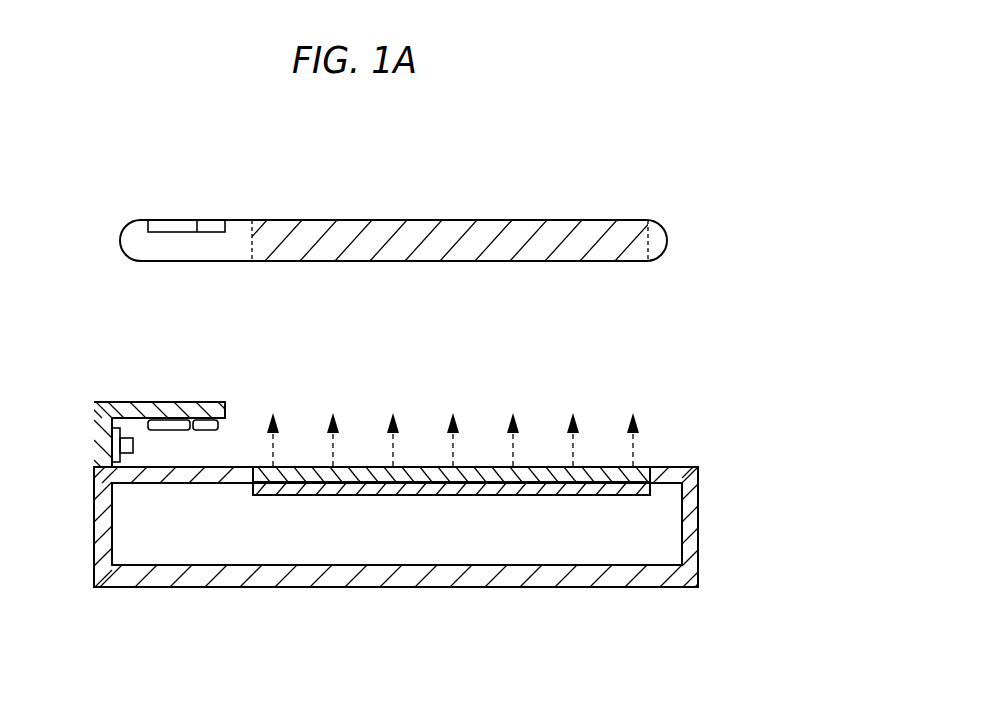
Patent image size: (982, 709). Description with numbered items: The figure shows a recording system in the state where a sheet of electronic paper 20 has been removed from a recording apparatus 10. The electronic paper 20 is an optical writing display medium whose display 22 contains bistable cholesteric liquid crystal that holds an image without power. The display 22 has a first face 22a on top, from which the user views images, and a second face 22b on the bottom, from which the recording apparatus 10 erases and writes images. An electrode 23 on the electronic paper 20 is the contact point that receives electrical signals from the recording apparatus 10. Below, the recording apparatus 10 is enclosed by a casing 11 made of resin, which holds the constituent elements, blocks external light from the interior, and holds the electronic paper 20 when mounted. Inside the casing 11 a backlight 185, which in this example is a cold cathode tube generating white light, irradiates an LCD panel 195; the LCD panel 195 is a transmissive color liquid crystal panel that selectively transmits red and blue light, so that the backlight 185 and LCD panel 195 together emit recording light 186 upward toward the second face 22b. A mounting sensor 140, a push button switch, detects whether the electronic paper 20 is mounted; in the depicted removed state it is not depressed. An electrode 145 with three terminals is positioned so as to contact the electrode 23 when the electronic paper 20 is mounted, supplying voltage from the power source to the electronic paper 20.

The recording apparatus 10 is at (401, 495).
The casing 11 is at (213, 397).
The electronic paper 20 is at (476, 204).
The display 22 is at (428, 216).
The first face 22a is at (603, 212).
The second face 22b is at (599, 272).
The electrode 23 is at (170, 216).
The mounting sensor 140 is at (112, 418).
The electrode 145 is at (232, 420).
The backlight 185 is at (616, 507).
The recording light 186 is at (513, 443).
The LCD panel 195 is at (600, 450).